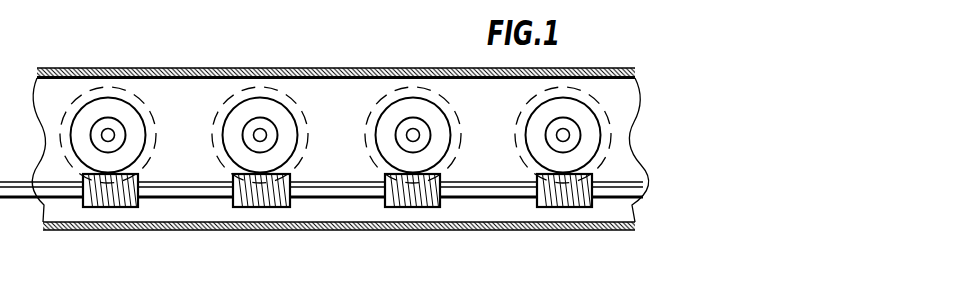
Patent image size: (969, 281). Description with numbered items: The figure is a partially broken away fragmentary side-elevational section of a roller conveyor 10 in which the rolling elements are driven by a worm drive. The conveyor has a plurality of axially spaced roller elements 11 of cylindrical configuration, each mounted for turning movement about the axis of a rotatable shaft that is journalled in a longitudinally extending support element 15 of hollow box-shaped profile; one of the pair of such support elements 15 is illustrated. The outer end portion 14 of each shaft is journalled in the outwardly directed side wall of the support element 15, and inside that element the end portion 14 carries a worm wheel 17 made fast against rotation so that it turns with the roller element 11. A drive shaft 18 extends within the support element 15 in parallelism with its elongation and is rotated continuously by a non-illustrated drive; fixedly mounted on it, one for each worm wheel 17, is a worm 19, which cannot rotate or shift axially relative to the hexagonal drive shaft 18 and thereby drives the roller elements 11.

The roller conveyor 10 is at (142, 242).
The roller element 11 is at (133, 90).
The end portion 14 is at (257, 133).
The support element 15 is at (573, 72).
The worm wheel 17 is at (238, 145).
The drive shaft 18 is at (490, 190).
The worm 19 is at (93, 203).